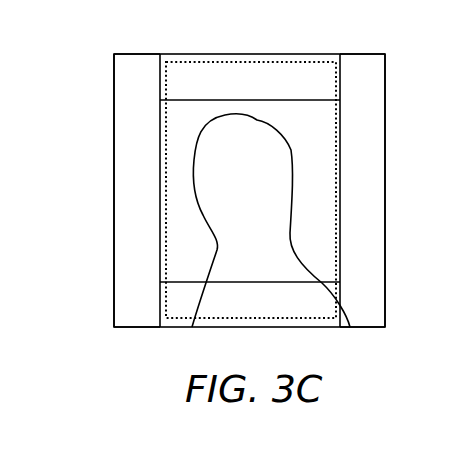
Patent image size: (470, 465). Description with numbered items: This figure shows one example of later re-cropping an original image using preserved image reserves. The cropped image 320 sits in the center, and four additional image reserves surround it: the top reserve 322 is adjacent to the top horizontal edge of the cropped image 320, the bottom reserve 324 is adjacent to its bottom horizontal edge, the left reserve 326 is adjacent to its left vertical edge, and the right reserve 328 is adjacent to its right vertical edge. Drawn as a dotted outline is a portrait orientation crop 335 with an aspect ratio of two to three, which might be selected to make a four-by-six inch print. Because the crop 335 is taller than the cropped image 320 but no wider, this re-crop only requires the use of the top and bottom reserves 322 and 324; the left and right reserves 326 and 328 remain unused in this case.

The cropped image 320 is at (318, 118).
The top reserve 322 is at (270, 72).
The bottom reserve 324 is at (225, 300).
The left reserve 326 is at (125, 66).
The right reserve 328 is at (372, 68).
The portrait orientation crop 335 is at (318, 320).